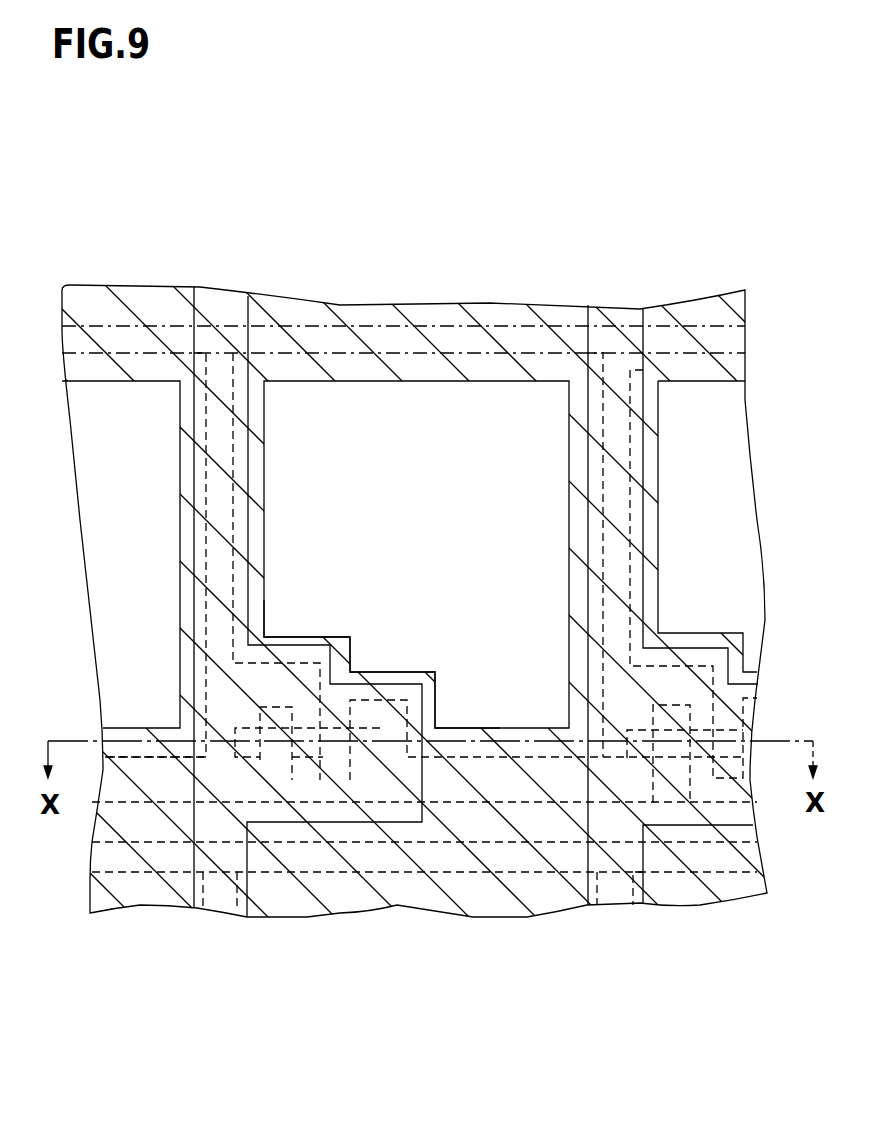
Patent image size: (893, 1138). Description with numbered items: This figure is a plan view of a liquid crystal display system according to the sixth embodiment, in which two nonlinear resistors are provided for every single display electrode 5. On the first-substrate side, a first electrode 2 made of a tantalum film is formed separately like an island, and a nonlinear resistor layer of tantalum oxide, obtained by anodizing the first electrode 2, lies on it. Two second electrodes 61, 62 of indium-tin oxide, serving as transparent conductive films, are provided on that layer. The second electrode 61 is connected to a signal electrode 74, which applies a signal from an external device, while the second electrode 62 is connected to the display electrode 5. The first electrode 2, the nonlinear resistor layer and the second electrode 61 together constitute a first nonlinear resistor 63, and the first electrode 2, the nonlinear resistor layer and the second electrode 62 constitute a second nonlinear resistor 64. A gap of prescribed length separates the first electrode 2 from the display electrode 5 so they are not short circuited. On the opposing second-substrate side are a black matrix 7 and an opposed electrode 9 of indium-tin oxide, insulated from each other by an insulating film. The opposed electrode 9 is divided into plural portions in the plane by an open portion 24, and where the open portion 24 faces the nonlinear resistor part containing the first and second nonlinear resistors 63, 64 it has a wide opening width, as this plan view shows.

The opposed electrode 9 is at (708, 302).
The display electrode 5 is at (443, 400).
The black matrix 7 is at (220, 497).
The open portion 24 is at (304, 657).
The second electrode 62 is at (337, 713).
The second electrode 61 is at (272, 719).
The first nonlinear resistor 63 is at (278, 754).
The second nonlinear resistor 64 is at (339, 754).
The first electrode 2 is at (245, 748).
The signal electrode 74 is at (507, 835).